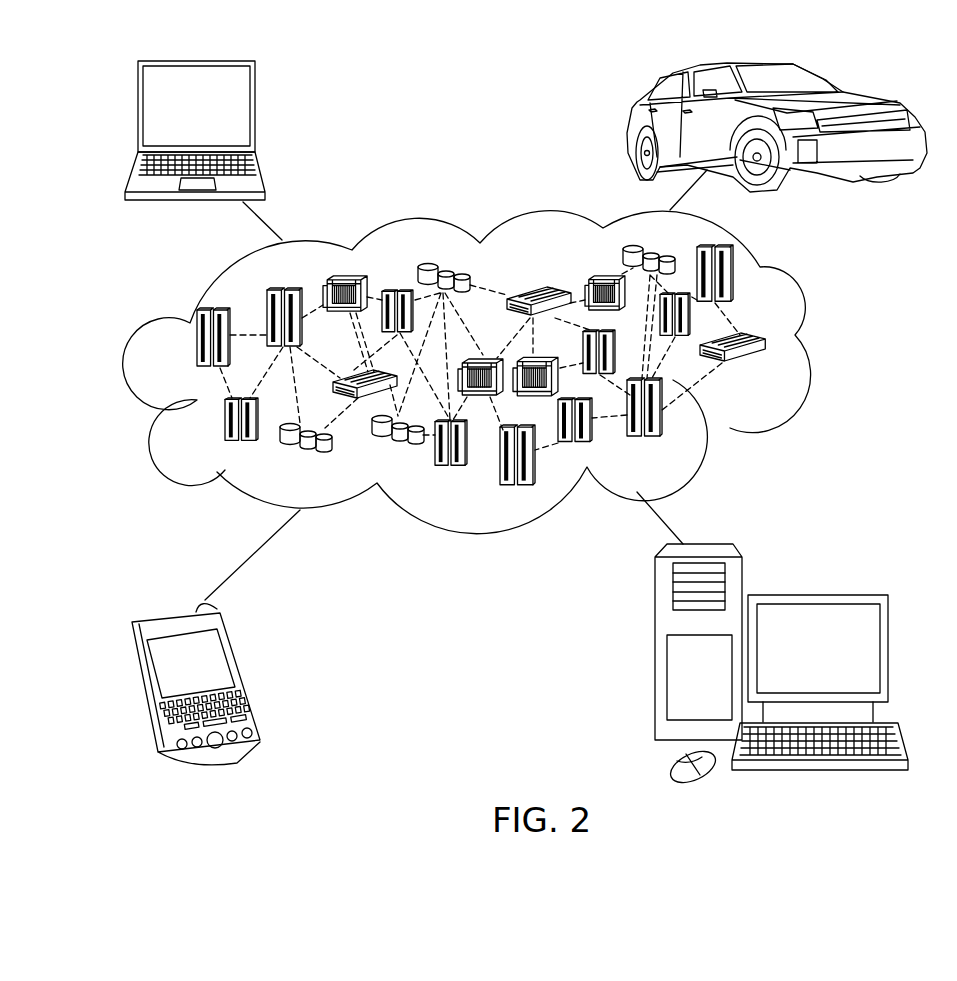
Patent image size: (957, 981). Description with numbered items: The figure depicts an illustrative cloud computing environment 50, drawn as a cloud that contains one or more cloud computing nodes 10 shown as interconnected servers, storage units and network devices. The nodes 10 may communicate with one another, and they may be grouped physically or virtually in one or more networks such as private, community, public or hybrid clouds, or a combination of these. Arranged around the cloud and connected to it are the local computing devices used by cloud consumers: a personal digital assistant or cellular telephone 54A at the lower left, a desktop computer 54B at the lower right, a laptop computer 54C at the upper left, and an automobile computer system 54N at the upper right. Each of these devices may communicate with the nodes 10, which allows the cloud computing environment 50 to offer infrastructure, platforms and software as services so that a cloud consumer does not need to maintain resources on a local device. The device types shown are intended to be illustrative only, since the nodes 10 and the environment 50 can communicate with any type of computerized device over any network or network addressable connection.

The cloud computing node 10 is at (770, 373).
The cloud computing environment 50 is at (820, 347).
The personal digital assistant or cellular telephone 54A is at (247, 672).
The desktop computer 54B is at (815, 595).
The laptop computer 54C is at (255, 110).
The automobile computer system 54N is at (629, 128).